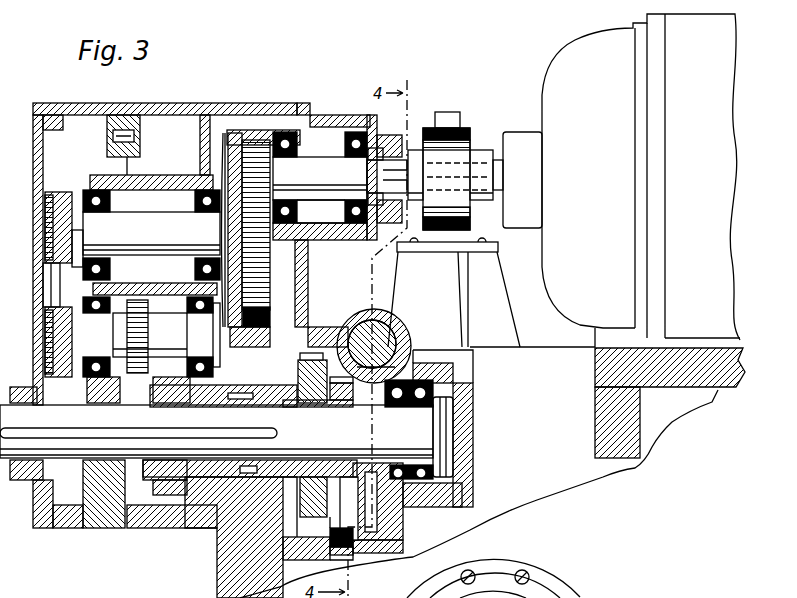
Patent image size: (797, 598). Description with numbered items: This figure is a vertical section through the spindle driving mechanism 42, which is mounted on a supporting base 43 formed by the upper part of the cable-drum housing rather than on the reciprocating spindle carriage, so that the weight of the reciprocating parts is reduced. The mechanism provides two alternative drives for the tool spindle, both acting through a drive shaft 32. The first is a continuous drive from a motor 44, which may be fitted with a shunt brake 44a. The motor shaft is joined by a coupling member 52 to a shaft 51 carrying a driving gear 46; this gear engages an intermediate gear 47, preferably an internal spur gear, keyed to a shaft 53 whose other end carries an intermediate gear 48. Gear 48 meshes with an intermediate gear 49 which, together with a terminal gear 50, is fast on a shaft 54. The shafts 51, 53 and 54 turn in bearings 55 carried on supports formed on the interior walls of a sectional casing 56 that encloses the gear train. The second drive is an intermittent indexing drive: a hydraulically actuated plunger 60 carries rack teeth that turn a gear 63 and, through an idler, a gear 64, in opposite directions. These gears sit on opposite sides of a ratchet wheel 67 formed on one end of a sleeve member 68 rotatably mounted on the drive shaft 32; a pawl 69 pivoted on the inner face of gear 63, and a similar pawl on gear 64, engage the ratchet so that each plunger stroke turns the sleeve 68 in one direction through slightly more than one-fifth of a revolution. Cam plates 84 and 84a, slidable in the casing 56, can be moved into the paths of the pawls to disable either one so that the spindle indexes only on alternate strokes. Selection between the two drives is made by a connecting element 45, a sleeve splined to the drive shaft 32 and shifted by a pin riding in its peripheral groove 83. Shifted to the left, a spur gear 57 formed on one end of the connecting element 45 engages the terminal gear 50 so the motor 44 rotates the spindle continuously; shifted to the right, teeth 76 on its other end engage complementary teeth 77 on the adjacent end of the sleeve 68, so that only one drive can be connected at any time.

The drive shaft 32 is at (68, 458).
The spindle driving mechanism 42 is at (311, 97).
The supporting base 43 is at (597, 430).
The motor 44 is at (560, 78).
The shunt brake 44a is at (476, 126).
The connecting element 45 is at (236, 390).
The driving gear 46 is at (268, 170).
The intermediate gear 47 is at (262, 292).
The intermediate gear 48 is at (58, 194).
The intermediate gear 49 is at (58, 376).
The terminal gear 50 is at (148, 338).
The shaft 51 is at (321, 211).
The coupling member 52 is at (455, 175).
The shaft 53 is at (147, 225).
The shaft 54 is at (165, 320).
The bearings 55 is at (205, 214).
The sectional casing 56 is at (190, 103).
The spur gear 57 is at (153, 391).
The plunger 60 is at (386, 336).
The gear 63 is at (410, 350).
The gear 64 is at (300, 358).
The ratchet wheel 67 is at (340, 400).
The sleeve member 68 is at (298, 404).
The pawl 69 is at (323, 497).
The teeth 76 is at (270, 404).
The teeth 77 is at (287, 440).
The peripheral groove 83 is at (247, 474).
The cam plate 84 is at (355, 548).
The cam plate 84a is at (345, 560).